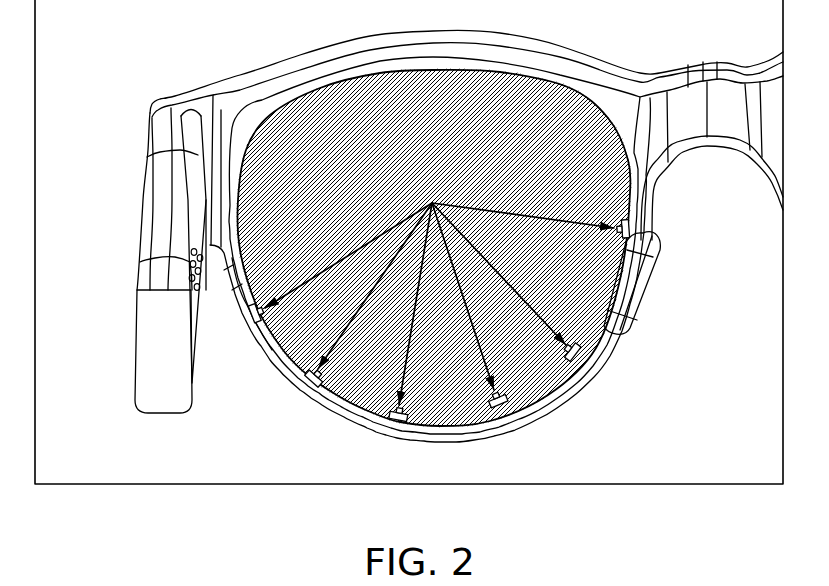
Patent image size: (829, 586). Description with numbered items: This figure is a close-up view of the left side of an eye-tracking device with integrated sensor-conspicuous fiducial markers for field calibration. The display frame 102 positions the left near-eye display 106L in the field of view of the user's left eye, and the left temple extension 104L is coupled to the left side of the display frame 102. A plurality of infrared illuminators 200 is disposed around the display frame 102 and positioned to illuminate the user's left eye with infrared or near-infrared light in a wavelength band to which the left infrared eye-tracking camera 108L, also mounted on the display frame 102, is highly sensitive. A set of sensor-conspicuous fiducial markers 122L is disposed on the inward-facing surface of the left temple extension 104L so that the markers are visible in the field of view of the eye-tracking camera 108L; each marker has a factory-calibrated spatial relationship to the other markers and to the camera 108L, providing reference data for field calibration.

The display frame 102 is at (247, 63).
The left temple extension 104L is at (143, 207).
The left near-eye display 106L is at (468, 124).
The left infrared eye-tracking camera 108L is at (645, 295).
The set of sensor-conspicuous fiducial markers 122L is at (206, 299).
The plurality of infrared illuminators 200 is at (438, 298).